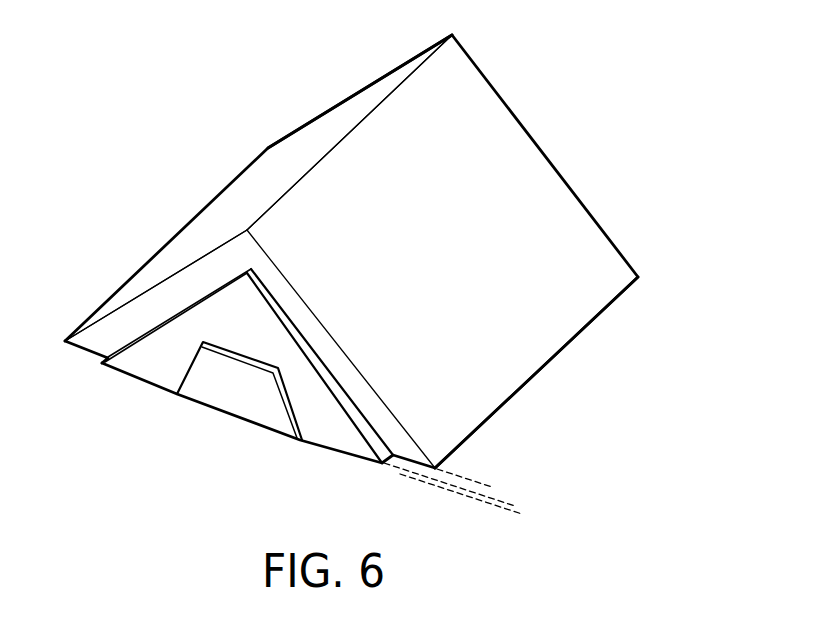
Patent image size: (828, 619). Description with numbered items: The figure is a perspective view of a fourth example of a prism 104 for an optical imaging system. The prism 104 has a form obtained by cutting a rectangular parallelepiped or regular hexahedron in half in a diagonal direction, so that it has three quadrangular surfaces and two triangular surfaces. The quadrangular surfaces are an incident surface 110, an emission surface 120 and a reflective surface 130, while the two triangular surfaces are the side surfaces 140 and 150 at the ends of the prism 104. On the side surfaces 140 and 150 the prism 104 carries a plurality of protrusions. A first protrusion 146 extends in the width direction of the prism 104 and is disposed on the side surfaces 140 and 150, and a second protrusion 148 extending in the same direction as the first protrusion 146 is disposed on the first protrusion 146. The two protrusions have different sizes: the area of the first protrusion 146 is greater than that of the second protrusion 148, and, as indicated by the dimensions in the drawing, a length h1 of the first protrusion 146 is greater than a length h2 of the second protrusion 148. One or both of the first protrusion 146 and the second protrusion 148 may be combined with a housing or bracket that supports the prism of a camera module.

The prism 104 is at (372, 279).
The incident surface 110 is at (242, 198).
The emission surface 120 is at (545, 290).
The reflective surface 130 is at (498, 355).
The side surface 140 is at (97, 342).
The first protrusion 146 is at (162, 352).
The second protrusion 148 is at (215, 373).
The side surface 150 is at (485, 138).
The length of the first protrusion h1 is at (458, 503).
The length of the second protrusion h2 is at (500, 527).